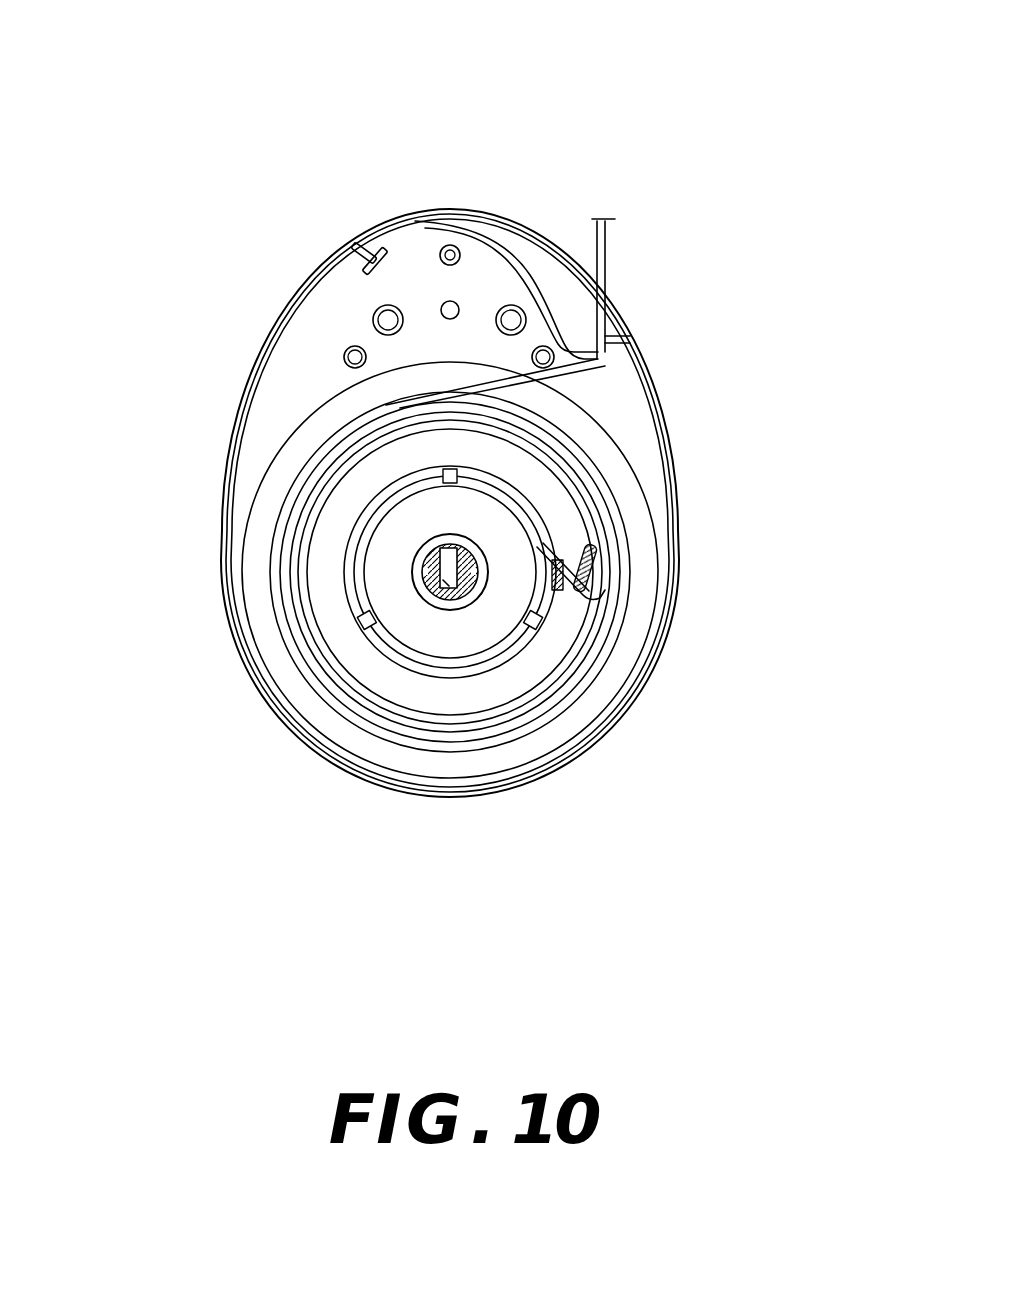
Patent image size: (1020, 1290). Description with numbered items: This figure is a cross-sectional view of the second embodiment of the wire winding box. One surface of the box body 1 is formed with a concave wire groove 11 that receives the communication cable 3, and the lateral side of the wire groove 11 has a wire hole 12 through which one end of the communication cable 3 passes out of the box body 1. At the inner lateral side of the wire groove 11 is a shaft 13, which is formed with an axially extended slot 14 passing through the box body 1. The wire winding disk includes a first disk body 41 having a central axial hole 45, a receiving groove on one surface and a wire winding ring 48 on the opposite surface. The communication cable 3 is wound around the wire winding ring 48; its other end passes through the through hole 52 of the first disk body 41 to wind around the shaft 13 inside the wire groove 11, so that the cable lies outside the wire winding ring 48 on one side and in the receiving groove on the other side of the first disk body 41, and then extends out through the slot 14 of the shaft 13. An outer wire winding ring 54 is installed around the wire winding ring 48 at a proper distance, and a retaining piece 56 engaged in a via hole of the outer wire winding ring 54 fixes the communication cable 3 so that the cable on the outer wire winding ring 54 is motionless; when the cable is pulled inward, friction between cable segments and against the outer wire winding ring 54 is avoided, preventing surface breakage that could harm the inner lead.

The box body 1 is at (440, 207).
The wire groove 11 is at (297, 333).
The wire hole 12 is at (596, 228).
The communication cable 3 is at (602, 515).
The first disk body 41 is at (585, 712).
The outer wire winding ring 54 is at (533, 690).
The shaft 13 is at (428, 597).
The wire winding ring 48 is at (382, 641).
The central axial hole 45 is at (420, 561).
The slot 14 is at (416, 571).
The through hole 52 is at (600, 598).
The retaining piece 56 is at (603, 578).